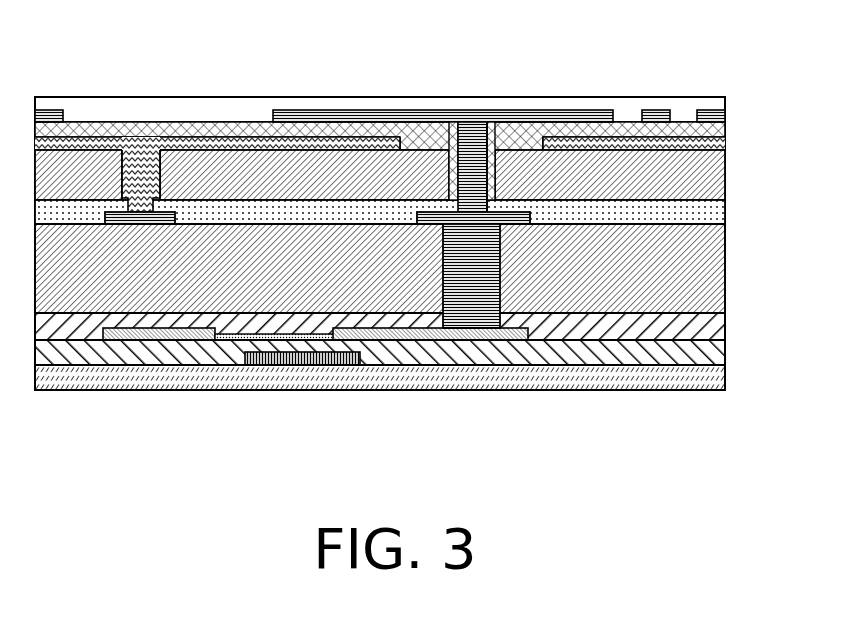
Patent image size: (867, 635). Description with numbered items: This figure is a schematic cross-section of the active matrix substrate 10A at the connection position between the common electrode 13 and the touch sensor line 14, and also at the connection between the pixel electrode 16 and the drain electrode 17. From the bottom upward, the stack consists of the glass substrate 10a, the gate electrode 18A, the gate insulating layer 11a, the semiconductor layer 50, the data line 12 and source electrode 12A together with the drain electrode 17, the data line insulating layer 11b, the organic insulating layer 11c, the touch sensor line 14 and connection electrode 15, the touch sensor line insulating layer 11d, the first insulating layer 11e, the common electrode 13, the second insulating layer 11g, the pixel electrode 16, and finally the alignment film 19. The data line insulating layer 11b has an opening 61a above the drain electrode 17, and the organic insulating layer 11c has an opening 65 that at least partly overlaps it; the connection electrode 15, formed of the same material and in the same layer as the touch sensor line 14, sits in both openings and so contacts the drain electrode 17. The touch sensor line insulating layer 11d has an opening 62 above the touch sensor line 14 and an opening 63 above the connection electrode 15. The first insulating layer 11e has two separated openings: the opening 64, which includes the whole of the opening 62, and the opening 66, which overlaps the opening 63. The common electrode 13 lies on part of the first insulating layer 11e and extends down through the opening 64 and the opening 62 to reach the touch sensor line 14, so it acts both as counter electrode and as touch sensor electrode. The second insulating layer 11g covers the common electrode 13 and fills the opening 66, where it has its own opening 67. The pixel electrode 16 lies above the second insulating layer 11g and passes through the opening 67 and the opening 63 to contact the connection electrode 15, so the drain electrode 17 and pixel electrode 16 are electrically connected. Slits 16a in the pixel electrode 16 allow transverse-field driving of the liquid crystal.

The active matrix substrate 10A is at (303, 92).
The alignment film 19 is at (712, 102).
The second insulating layer 11g is at (703, 133).
The common electrode 13 is at (95, 142).
The pixel electrode 16 is at (388, 115).
The slits 16a is at (697, 117).
The first insulating layer 11e is at (703, 186).
The touch sensor line insulating layer 11d is at (703, 207).
The opening 62 is at (140, 200).
The opening 64 is at (153, 156).
The touch sensor line 14 is at (112, 224).
The opening 66 is at (487, 168).
The opening 63 is at (470, 197).
The opening 67 is at (485, 137).
The connection electrode 15 is at (453, 322).
The organic insulating layer 11c is at (703, 298).
The data line insulating layer 11b is at (700, 330).
The data line 12 is at (160, 330).
The source electrode 12A is at (215, 338).
The drain electrode 17 is at (419, 340).
The opening 61a is at (483, 327).
The opening 65 is at (497, 272).
The gate insulating layer 11a is at (700, 358).
The gate electrode 18A is at (293, 360).
The semiconductor layer 50 is at (371, 363).
The glass substrate 10a is at (700, 380).